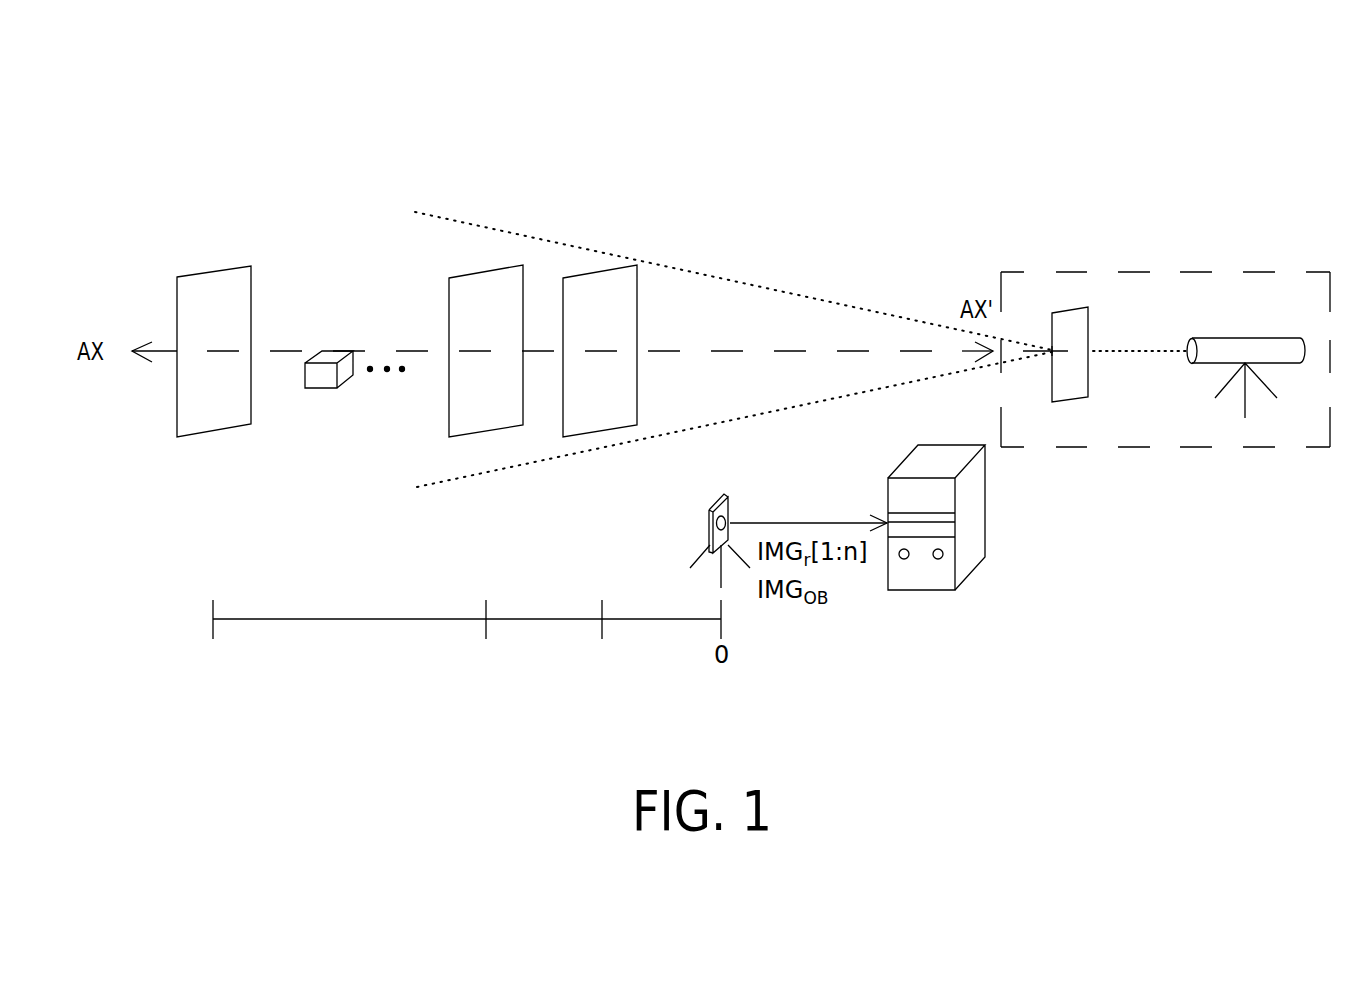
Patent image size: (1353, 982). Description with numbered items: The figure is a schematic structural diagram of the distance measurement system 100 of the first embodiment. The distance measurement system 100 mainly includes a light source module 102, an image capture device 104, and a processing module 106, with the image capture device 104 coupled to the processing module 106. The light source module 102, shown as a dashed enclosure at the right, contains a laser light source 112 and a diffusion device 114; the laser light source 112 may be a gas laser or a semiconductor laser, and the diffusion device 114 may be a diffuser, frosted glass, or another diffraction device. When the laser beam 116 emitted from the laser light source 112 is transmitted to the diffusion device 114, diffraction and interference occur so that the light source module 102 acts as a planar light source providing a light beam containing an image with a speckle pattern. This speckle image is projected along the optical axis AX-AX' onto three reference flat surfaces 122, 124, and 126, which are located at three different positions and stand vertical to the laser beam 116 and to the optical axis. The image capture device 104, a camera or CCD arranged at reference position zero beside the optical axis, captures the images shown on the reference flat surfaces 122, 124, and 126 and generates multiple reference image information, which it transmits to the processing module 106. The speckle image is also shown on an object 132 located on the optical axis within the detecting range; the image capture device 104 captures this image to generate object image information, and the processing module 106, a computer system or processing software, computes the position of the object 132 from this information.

The distance measurement system 100 is at (132, 165).
The light source module 102 is at (1135, 272).
The image capture device 104 is at (748, 485).
The processing module 106 is at (978, 507).
The laser light source 112 is at (1250, 338).
The diffusion device 114 is at (1075, 307).
The laser beam 116 is at (1135, 348).
The reference flat surface 122 is at (603, 265).
The reference flat surface 124 is at (490, 265).
The reference flat surface 126 is at (214, 268).
The object 132 is at (334, 354).